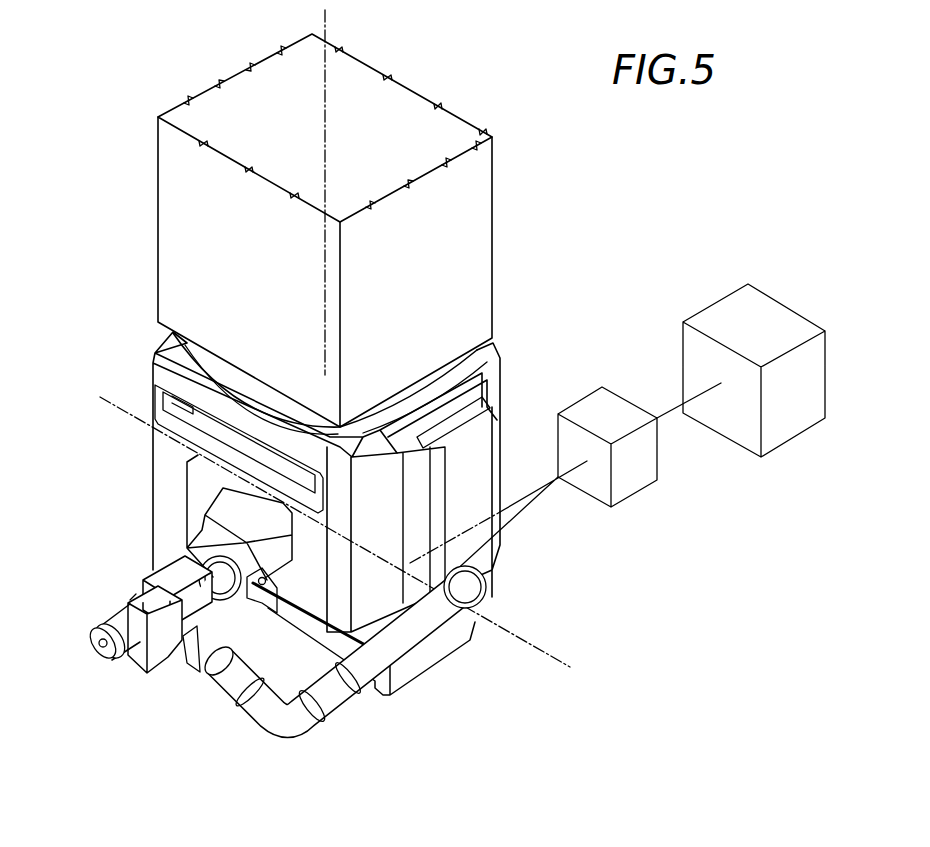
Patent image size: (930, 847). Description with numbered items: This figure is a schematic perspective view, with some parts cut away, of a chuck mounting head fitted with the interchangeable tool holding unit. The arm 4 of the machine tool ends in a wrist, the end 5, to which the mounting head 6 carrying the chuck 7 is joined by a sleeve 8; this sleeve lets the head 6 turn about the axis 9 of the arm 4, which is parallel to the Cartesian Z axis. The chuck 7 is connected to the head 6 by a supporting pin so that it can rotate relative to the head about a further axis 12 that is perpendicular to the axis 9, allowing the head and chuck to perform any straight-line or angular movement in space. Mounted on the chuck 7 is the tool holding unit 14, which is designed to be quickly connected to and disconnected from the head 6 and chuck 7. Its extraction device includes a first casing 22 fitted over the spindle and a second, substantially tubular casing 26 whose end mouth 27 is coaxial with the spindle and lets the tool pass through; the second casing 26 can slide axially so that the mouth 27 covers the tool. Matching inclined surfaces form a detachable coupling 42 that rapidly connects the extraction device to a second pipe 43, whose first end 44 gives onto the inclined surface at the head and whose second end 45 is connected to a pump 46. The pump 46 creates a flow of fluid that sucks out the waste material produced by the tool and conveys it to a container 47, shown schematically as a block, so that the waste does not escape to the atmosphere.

The arm 4 is at (207, 183).
The end of the arm (wrist) 5 is at (503, 307).
The mounting head 6 is at (150, 400).
The chuck 7 is at (210, 512).
The sleeve 8 is at (215, 369).
The axis of the arm 9 is at (327, 23).
The axis of chuck rotation 12 is at (548, 653).
The tool holding unit 14 is at (103, 574).
The first casing 22 is at (168, 583).
The second casing 26 is at (133, 663).
The end mouth 27 is at (95, 646).
The detachable coupling 42 is at (198, 675).
The second pipe 43 is at (330, 710).
The first end of the second pipe 44 is at (206, 684).
The second end of the second pipe 45 is at (480, 582).
The pump 46 is at (795, 416).
The container 47 is at (641, 480).